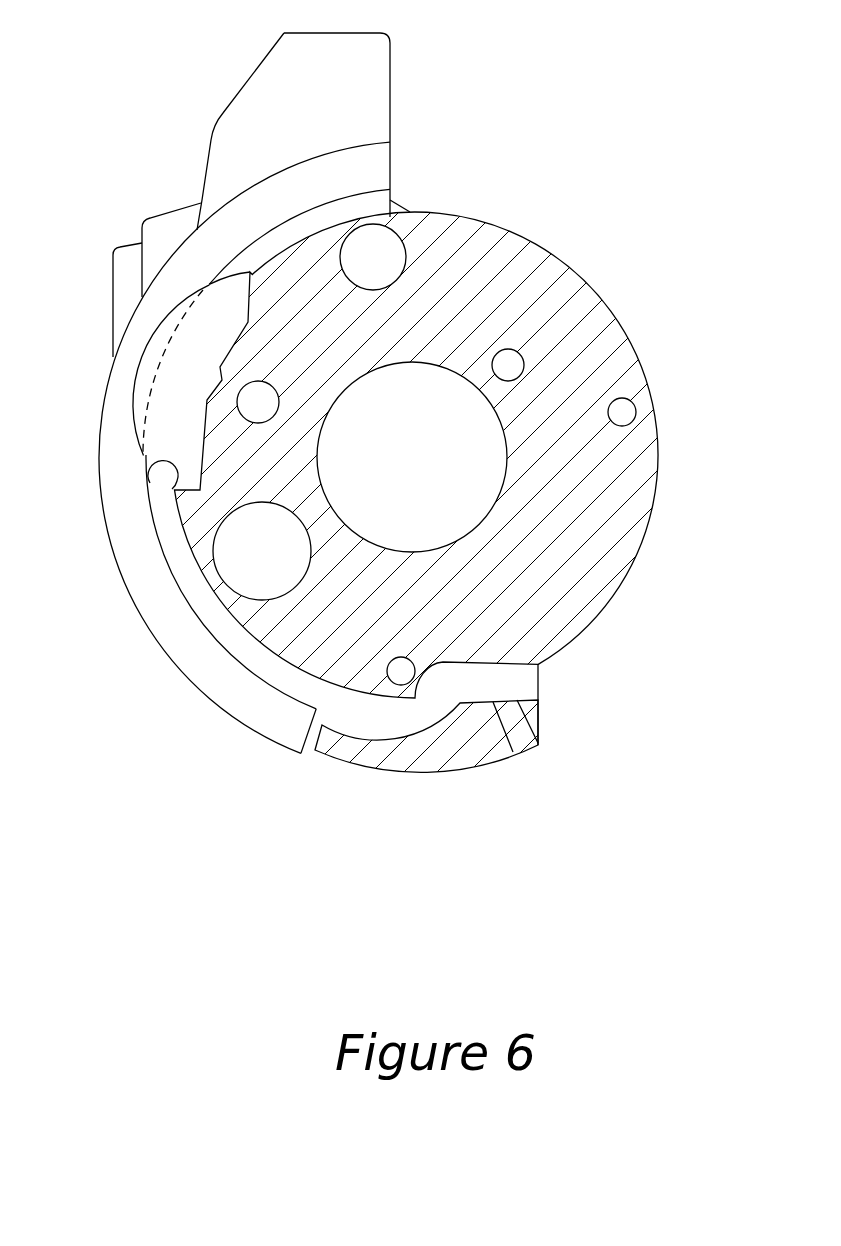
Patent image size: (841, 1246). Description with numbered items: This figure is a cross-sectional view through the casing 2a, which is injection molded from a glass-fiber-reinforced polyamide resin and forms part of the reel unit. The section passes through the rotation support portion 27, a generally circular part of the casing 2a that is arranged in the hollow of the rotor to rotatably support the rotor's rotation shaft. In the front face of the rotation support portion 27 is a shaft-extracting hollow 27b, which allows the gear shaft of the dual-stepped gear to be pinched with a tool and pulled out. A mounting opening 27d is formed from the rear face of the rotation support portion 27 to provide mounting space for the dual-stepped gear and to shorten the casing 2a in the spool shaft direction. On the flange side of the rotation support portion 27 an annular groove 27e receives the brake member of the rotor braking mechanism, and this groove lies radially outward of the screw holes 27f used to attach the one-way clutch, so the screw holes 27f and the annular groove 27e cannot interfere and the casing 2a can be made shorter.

The casing 2a is at (183, 118).
The rotation support portion 27 is at (614, 545).
The shaft-extracting hollow 27b is at (248, 407).
The mounting opening 27d is at (167, 487).
The annular groove 27e is at (262, 682).
The screw holes 27f is at (624, 413).